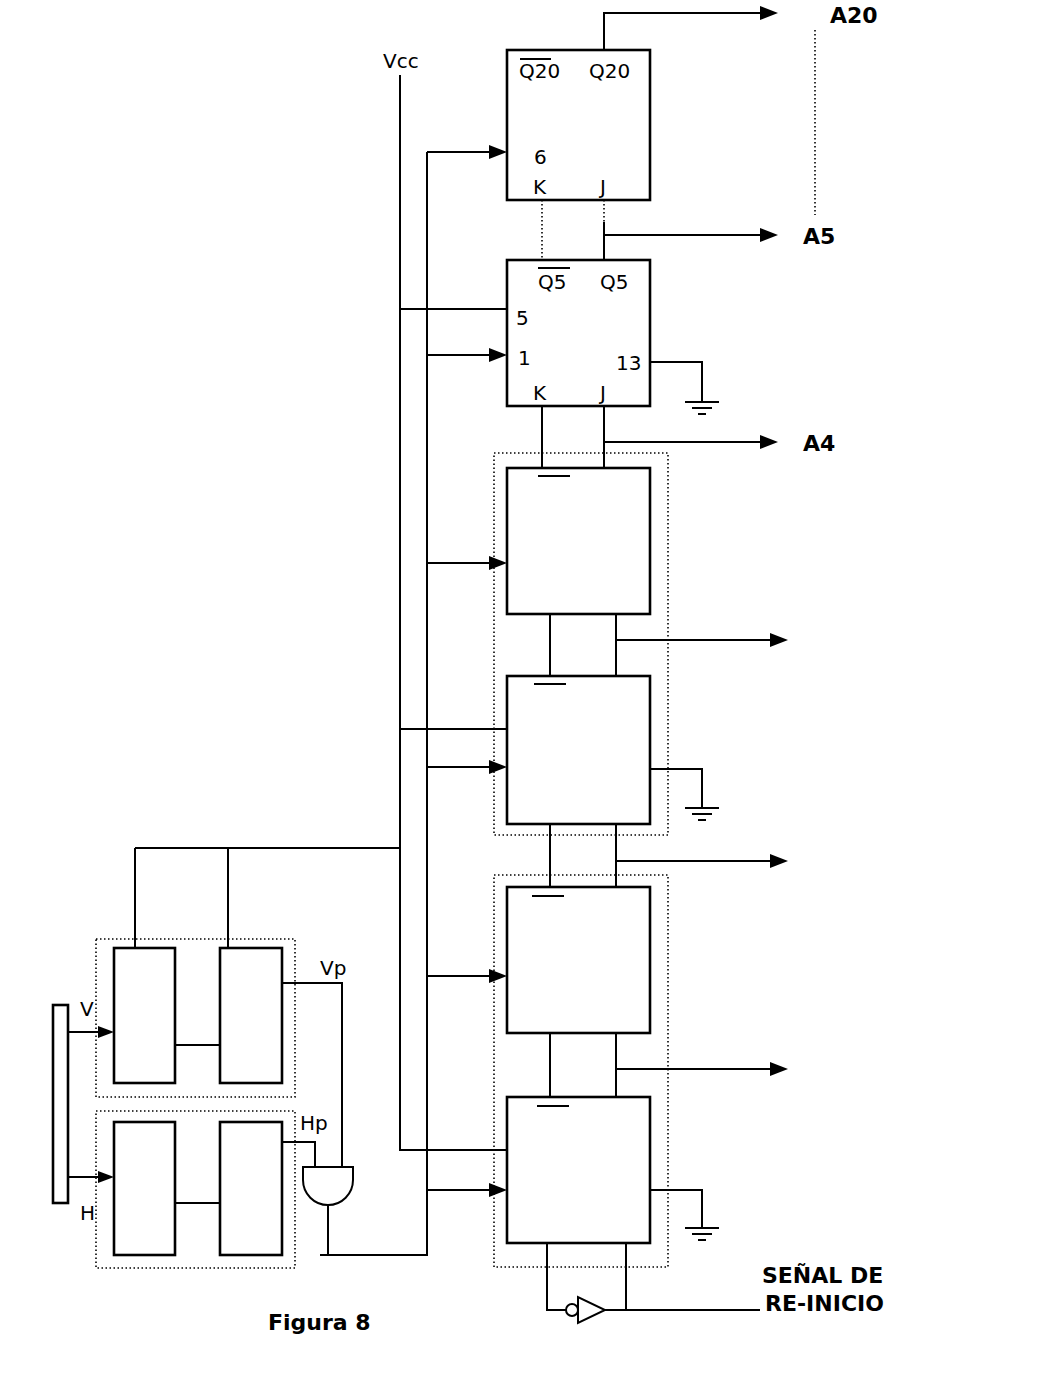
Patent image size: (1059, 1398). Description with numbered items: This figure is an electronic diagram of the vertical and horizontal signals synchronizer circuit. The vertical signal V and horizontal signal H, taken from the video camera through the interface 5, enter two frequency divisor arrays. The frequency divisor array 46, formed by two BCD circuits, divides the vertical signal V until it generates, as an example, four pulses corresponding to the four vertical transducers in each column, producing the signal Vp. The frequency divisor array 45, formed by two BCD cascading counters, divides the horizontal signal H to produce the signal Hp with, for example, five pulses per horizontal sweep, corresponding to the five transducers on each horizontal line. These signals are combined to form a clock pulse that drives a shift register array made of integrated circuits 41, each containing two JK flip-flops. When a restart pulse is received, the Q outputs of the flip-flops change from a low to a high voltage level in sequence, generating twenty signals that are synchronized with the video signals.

The interface 5 is at (73, 980).
The integrated circuits 41 is at (678, 987).
The frequency divisor array 45 is at (175, 1194).
The frequency divisor array 46 is at (195, 1002).